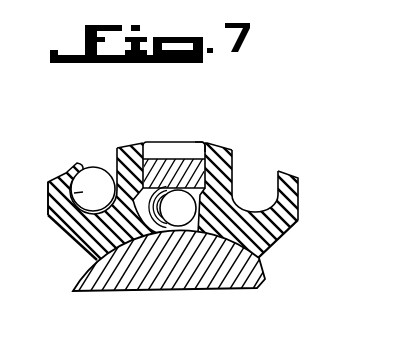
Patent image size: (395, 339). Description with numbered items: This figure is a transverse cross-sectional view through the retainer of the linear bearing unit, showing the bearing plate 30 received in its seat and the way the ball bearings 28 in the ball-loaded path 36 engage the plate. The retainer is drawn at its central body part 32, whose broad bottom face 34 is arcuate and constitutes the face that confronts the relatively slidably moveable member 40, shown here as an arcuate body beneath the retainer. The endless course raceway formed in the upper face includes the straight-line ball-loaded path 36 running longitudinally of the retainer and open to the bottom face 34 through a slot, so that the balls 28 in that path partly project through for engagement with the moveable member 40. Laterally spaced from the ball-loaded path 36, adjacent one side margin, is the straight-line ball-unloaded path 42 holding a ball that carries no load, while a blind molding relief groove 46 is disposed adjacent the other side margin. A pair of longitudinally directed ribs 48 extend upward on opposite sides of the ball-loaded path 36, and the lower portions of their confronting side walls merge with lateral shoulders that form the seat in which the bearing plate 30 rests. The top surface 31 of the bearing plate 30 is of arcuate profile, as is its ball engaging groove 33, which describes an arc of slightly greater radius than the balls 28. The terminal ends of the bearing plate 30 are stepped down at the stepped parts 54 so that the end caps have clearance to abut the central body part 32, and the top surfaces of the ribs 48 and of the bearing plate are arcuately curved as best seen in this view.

The ball bearings 28 is at (175, 224).
The bearing plate 30 is at (187, 143).
The top surface 31 is at (173, 151).
The central body part 32 is at (299, 222).
The ball engaging groove 33 is at (143, 235).
The bottom face 34 is at (110, 164).
The ball-loaded path 36 is at (233, 159).
The curved base 40 is at (263, 270).
The ball-unloaded path 42 is at (50, 216).
The blind molding relief groove 46 is at (257, 183).
The ribs 48 is at (132, 150).
The stepped parts 54 is at (203, 142).